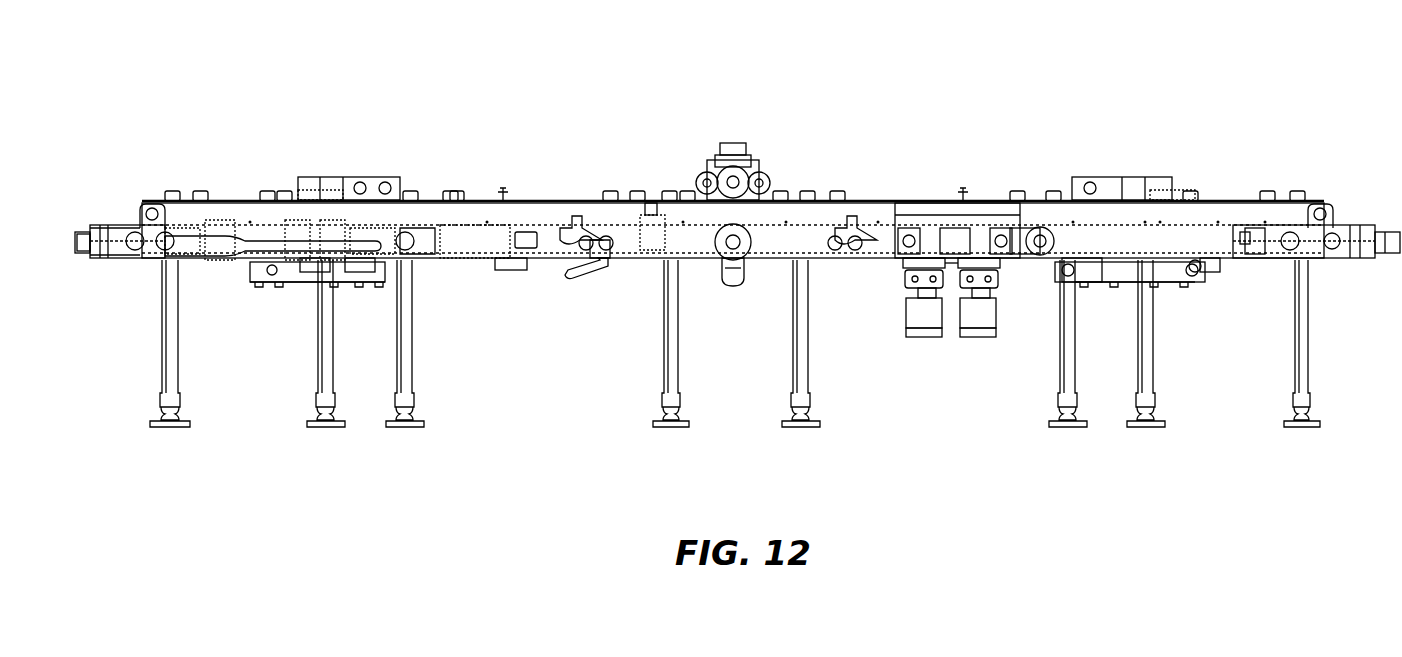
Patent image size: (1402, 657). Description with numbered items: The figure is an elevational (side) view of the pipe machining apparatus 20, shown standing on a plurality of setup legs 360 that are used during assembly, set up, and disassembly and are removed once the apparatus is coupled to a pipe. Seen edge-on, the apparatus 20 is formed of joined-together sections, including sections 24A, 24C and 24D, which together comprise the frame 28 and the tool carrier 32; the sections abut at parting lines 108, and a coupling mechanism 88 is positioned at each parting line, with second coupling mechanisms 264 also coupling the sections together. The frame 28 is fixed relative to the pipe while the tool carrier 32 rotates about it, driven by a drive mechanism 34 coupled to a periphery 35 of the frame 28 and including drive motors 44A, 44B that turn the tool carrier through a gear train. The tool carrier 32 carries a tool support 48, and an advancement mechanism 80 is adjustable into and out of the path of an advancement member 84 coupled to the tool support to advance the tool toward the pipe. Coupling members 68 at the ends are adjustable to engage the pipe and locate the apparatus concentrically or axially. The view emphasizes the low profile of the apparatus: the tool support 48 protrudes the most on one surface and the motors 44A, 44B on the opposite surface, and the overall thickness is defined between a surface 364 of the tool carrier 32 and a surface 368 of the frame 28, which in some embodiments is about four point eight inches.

The pipe machining apparatus 20 is at (1010, 72).
The first section 24A is at (240, 188).
The third section 24C is at (1248, 188).
The fourth section 24D is at (835, 180).
The frame 28 is at (490, 263).
The tool carrier 32 is at (490, 205).
The drive mechanism 34 is at (950, 350).
The periphery 35 is at (1232, 265).
The first drive motor 44A is at (990, 320).
The second drive motor 44B is at (898, 320).
The tool support 48 is at (748, 140).
The coupling member 68 is at (125, 272).
The advancement mechanism 80 is at (625, 283).
The advancement member 84 is at (712, 172).
The coupling mechanism 88 is at (382, 168).
The parting line 108 is at (318, 215).
The second coupling mechanism 264 is at (272, 292).
The setup leg 360 is at (168, 428).
The surface of the tool carrier 364 is at (926, 200).
The surface of the frame 368 is at (780, 262).